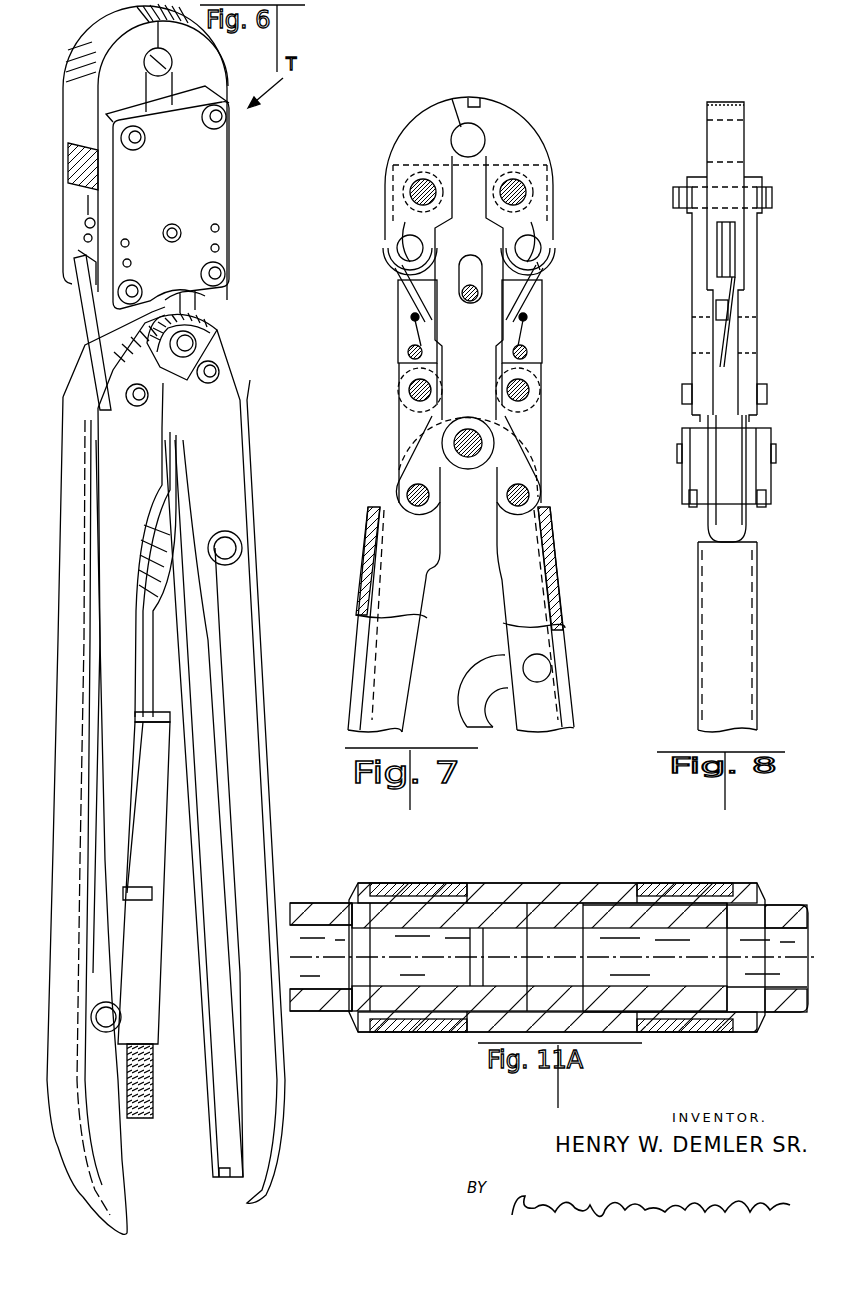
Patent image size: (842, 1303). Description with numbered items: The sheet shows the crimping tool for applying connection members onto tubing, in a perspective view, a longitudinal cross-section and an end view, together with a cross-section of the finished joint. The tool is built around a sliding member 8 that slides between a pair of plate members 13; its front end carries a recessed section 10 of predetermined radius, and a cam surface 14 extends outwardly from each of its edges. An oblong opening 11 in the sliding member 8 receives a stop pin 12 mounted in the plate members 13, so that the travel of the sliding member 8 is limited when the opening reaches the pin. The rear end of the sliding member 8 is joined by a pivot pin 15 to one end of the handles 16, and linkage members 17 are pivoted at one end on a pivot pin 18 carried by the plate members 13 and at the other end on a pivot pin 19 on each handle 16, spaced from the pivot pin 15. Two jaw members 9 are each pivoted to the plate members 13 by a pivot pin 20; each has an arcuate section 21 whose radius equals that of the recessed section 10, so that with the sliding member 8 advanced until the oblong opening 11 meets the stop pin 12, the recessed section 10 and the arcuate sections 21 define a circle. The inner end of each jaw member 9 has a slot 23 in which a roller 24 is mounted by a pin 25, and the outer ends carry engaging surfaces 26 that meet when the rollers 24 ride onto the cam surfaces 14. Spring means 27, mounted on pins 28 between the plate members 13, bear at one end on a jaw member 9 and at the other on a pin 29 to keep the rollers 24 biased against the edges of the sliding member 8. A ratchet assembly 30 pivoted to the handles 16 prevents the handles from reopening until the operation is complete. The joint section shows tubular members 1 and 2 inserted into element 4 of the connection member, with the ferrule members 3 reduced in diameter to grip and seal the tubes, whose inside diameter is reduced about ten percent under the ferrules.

In FIG. 11A, the tubular member 1 is at (318, 1005).
In FIG. 11A, the tubular member 2 is at (790, 1012).
In FIG. 11A, the ferrule member 3 is at (415, 883).
In FIG. 11A, the element 4 is at (548, 893).
In FIG. 6, the sliding member 8 is at (176, 297).
In FIG. 7, the sliding member 8 is at (490, 337).
In FIG. 6, the jaw member 9 is at (88, 42).
In FIG. 7, the jaw member 9 is at (422, 120).
In FIG. 8, the jaw member 9 is at (728, 102).
In FIG. 6, the recessed section 10 is at (165, 70).
In FIG. 7, the recessed section 10 is at (470, 160).
In FIG. 7, the oblong opening 11 is at (470, 262).
In FIG. 7, the stop pin 12 is at (470, 302).
In FIG. 6, the plate member 13 is at (68, 212).
In FIG. 7, the plate member 13 is at (540, 375).
In FIG. 8, the plate member 13 is at (692, 310).
In FIG. 7, the cam surface 14 is at (502, 232).
In FIG. 6, the pivot pin 15 is at (192, 345).
In FIG. 7, the pivot pin 15 is at (478, 443).
In FIG. 8, the pivot pin 15 is at (677, 452).
In FIG. 6, the handle 16 is at (68, 785).
In FIG. 7, the handle 16 is at (368, 638).
In FIG. 8, the handle 16 is at (710, 662).
In FIG. 6, the linkage member 17 is at (85, 320).
In FIG. 7, the linkage member 17 is at (404, 430).
In FIG. 8, the linkage member 17 is at (730, 542).
In FIG. 6, the pivot pin 18 is at (138, 288).
In FIG. 7, the pivot pin 18 is at (410, 390).
In FIG. 8, the pivot pin 18 is at (682, 392).
In FIG. 6, the pivot pin 19 is at (136, 406).
In FIG. 7, the pivot pin 19 is at (405, 495).
In FIG. 8, the pivot pin 19 is at (689, 507).
In FIG. 7, the pivot pin 20 is at (412, 192).
In FIG. 8, the pivot pin 20 is at (673, 197).
In FIG. 7, the arcuate section 21 is at (461, 126).
In FIG. 8, the slot 23 is at (720, 250).
In FIG. 7, the roller 24 is at (386, 250).
In FIG. 8, the roller 24 is at (735, 256).
In FIG. 7, the pin 25 is at (538, 262).
In FIG. 7, the engaging surface 26 is at (478, 103).
In FIG. 7, the spring means 27 is at (398, 298).
In FIG. 7, the pin 28 is at (412, 320).
In FIG. 7, the pin 29 is at (527, 355).
In FIG. 6, the ratchet assembly 30 is at (168, 950).